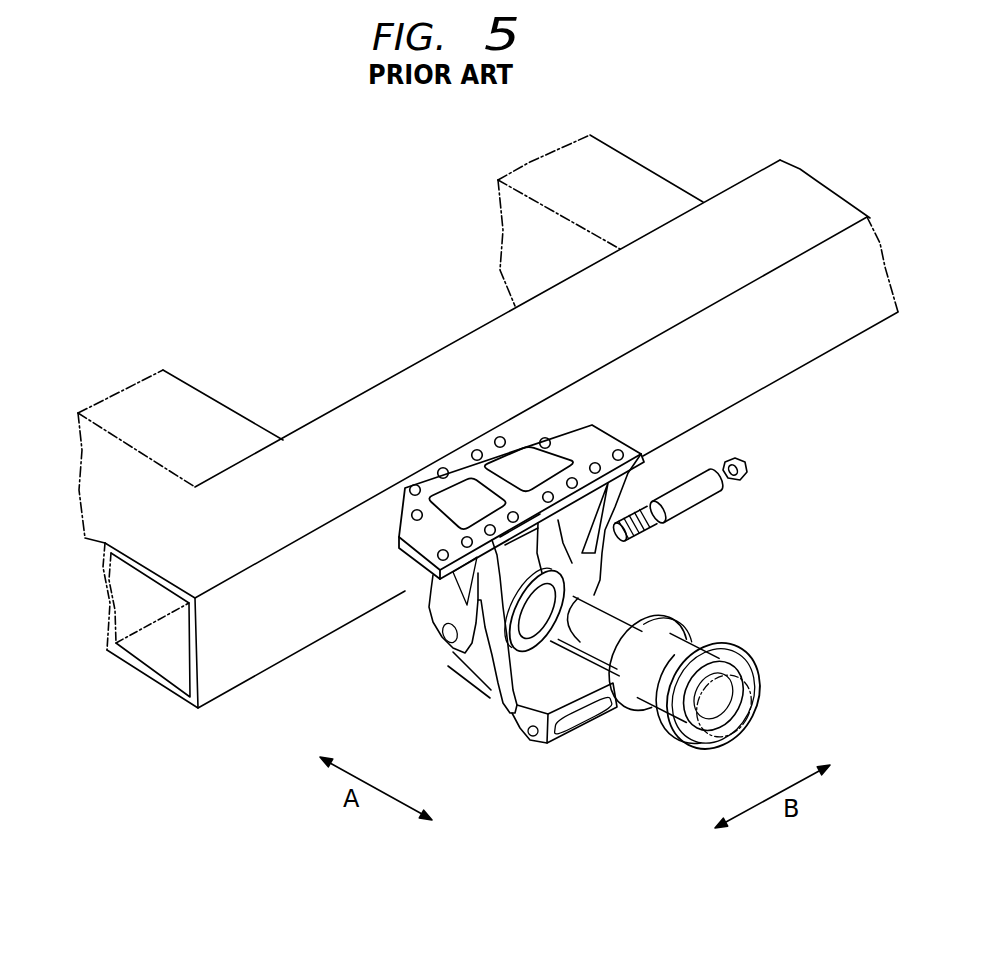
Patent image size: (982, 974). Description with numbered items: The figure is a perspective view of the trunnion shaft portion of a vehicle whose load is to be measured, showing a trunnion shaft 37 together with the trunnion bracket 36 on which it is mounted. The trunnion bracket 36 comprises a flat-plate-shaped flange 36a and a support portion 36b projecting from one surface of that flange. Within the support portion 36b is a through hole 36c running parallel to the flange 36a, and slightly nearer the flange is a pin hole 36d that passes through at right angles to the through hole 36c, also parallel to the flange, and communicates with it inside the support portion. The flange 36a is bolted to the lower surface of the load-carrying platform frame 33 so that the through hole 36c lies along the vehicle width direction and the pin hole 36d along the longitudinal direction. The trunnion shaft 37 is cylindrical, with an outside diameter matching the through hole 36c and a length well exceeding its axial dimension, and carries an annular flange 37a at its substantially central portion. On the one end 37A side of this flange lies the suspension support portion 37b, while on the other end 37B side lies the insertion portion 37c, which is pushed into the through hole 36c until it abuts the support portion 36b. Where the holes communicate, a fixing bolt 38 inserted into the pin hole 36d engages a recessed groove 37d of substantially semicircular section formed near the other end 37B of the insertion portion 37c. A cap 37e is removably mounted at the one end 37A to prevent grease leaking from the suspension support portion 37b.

The load-carrying platform frame 33 is at (427, 370).
The trunnion bracket 36 is at (487, 589).
The flange 36a is at (415, 502).
The support portion 36b is at (455, 673).
The through hole 36c is at (480, 693).
The pin hole 36d is at (450, 637).
The trunnion shaft 37 is at (662, 678).
The annular flange 37a is at (628, 705).
The suspension support portion 37b is at (657, 713).
The insertion portion 37c is at (527, 720).
The recessed groove 37d is at (573, 593).
The cap 37e is at (705, 750).
The one end 37A is at (757, 708).
The other end 37B is at (578, 585).
The fixing bolt 38 is at (710, 498).